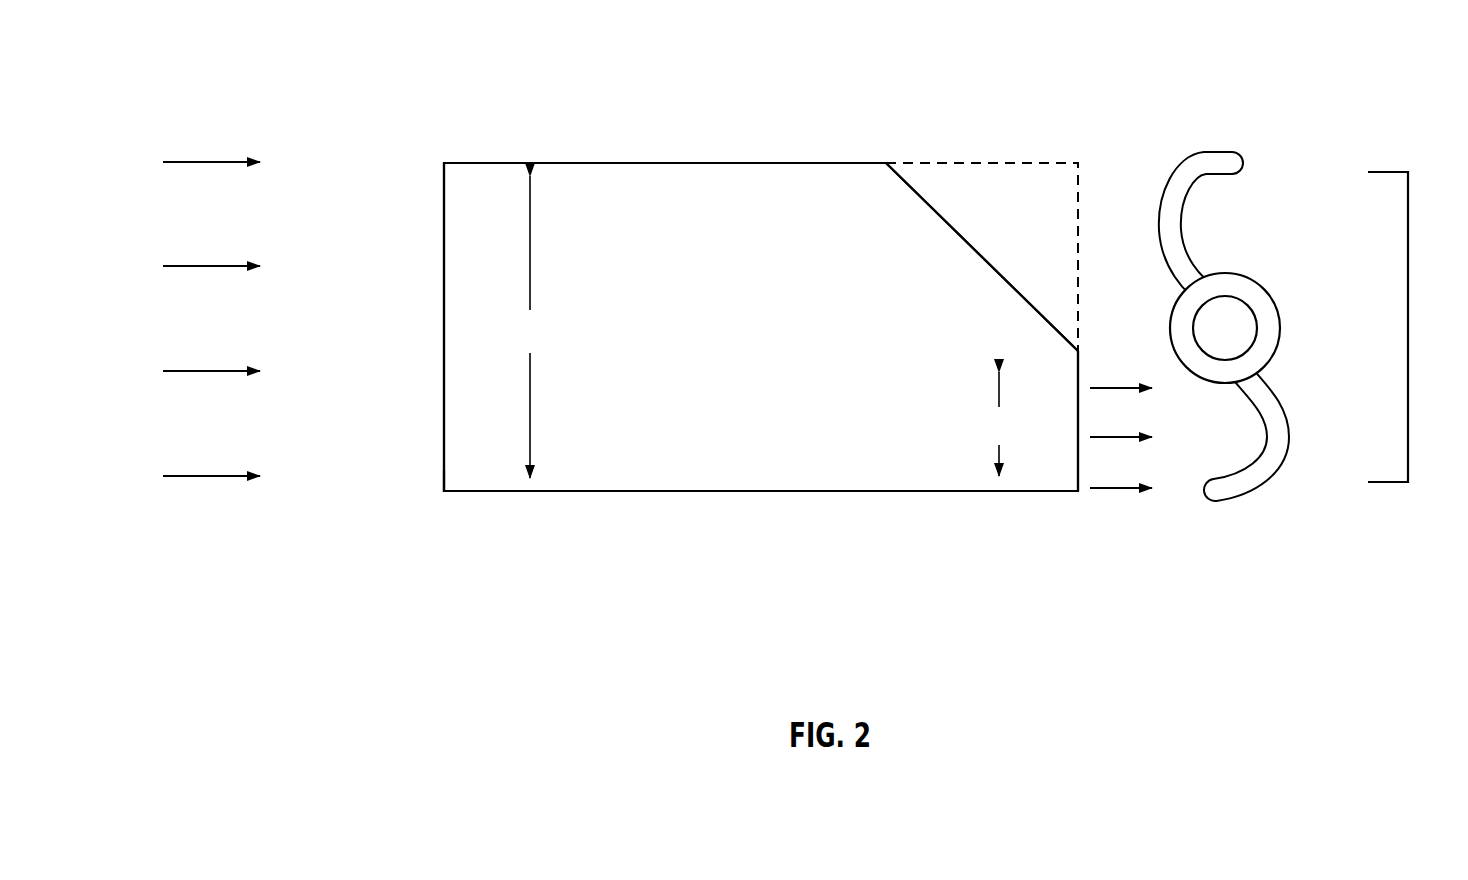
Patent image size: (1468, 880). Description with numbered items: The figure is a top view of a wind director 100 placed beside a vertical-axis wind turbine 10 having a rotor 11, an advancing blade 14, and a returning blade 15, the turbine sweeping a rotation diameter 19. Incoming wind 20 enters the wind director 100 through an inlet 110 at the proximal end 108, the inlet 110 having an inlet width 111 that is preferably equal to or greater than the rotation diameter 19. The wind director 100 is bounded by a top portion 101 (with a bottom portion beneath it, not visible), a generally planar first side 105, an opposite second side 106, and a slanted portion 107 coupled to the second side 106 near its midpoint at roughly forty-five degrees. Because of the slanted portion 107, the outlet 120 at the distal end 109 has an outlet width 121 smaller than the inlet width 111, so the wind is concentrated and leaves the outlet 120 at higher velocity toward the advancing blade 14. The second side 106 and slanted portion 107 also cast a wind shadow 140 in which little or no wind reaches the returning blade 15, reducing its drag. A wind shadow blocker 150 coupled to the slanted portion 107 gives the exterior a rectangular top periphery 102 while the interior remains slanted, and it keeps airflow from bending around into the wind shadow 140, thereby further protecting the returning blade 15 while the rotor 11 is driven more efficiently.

The wind turbine 10 is at (1296, 341).
The rotor 11 is at (1270, 300).
The advancing blade 14 is at (1243, 500).
The returning blade 15 is at (1172, 178).
The rotation diameter 19 is at (1410, 327).
The wind 20 is at (145, 112).
The wind director 100 is at (755, 286).
The top portion 101 is at (760, 334).
The top periphery 102 is at (540, 492).
The first side 105 is at (778, 472).
The second side 106 is at (638, 162).
The slanted portion 107 is at (902, 178).
The proximal end 108 is at (444, 381).
The distal end 109 is at (1065, 368).
The inlet 110 is at (444, 270).
The inlet width 111 is at (533, 327).
The outlet 120 is at (1078, 473).
The outlet width 121 is at (999, 424).
The wind shadow 140 is at (1040, 239).
The wind shadow blocker 150 is at (1048, 162).